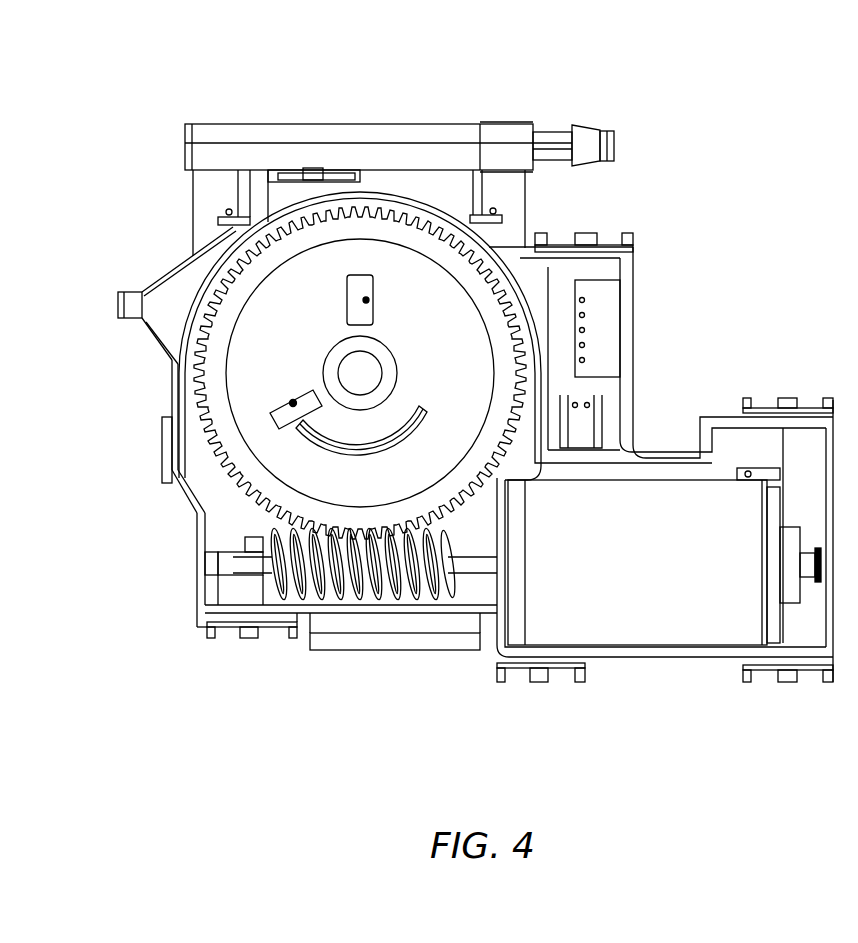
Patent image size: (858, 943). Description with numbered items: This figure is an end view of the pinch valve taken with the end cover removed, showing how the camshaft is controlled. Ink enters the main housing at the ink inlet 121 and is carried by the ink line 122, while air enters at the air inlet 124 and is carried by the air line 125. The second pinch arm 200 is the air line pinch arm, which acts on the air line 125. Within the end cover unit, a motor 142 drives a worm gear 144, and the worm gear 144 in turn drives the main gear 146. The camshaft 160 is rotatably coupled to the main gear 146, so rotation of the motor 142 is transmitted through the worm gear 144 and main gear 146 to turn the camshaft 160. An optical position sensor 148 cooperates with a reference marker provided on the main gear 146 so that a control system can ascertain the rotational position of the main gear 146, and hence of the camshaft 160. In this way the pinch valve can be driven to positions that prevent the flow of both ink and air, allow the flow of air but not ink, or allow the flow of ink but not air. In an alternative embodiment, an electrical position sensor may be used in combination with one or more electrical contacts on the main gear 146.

The air inlet 124 is at (218, 106).
The ink inlet 121 is at (638, 147).
The air line 125 is at (210, 200).
The ink line 122 is at (508, 196).
The second (air line) pinch arm 200 is at (118, 305).
The main gear 146 is at (216, 380).
The position sensor 148 is at (362, 314).
The camshaft 160 is at (366, 373).
The worm gear 144 is at (360, 610).
The motor 142 is at (640, 620).